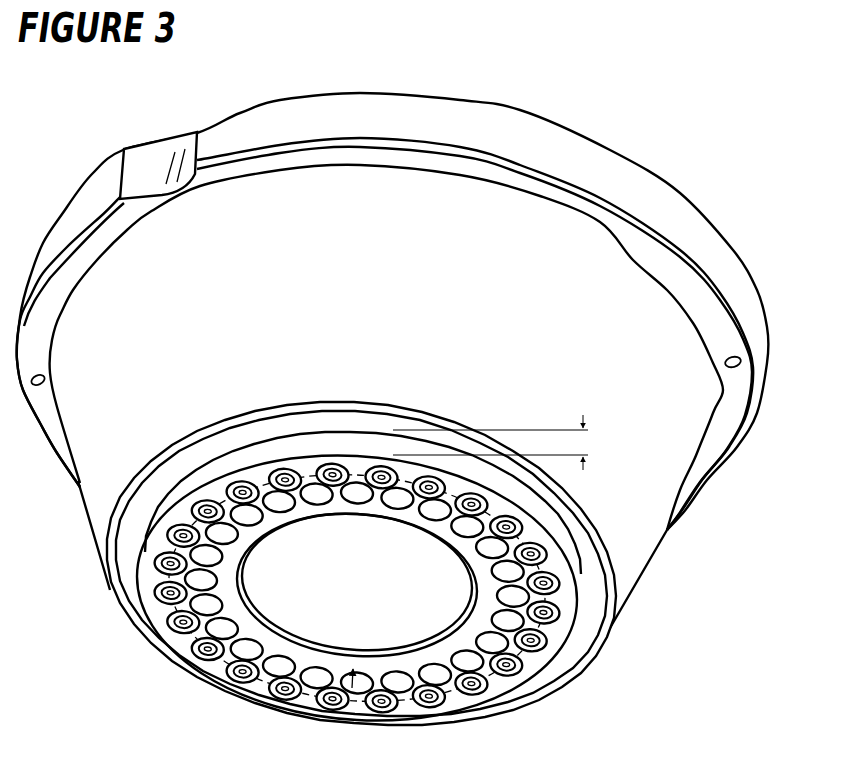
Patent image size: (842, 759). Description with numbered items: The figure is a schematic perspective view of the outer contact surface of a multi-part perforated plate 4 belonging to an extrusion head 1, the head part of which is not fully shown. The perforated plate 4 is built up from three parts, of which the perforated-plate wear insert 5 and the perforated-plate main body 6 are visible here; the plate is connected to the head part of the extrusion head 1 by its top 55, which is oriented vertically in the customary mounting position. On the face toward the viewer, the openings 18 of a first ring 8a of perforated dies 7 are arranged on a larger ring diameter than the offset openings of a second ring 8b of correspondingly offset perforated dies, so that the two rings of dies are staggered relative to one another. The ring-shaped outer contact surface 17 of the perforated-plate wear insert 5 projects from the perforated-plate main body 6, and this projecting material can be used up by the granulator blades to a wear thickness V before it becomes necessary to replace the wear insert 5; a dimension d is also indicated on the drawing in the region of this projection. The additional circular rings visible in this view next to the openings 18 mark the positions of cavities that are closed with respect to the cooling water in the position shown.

The extrusion head 1 is at (660, 60).
The perforated plate 4 is at (508, 105).
The perforated-plate wear insert 5 is at (160, 508).
The perforated-plate main body 6 is at (83, 448).
The perforated dies 7 is at (357, 587).
The first ring 8a is at (357, 585).
The second ring 8b is at (357, 588).
The ring-shaped outer contact surface 17 is at (158, 610).
The openings 18 is at (357, 587).
The top 55 is at (100, 172).
The distance d is at (492, 442).
The wear thickness V is at (357, 645).